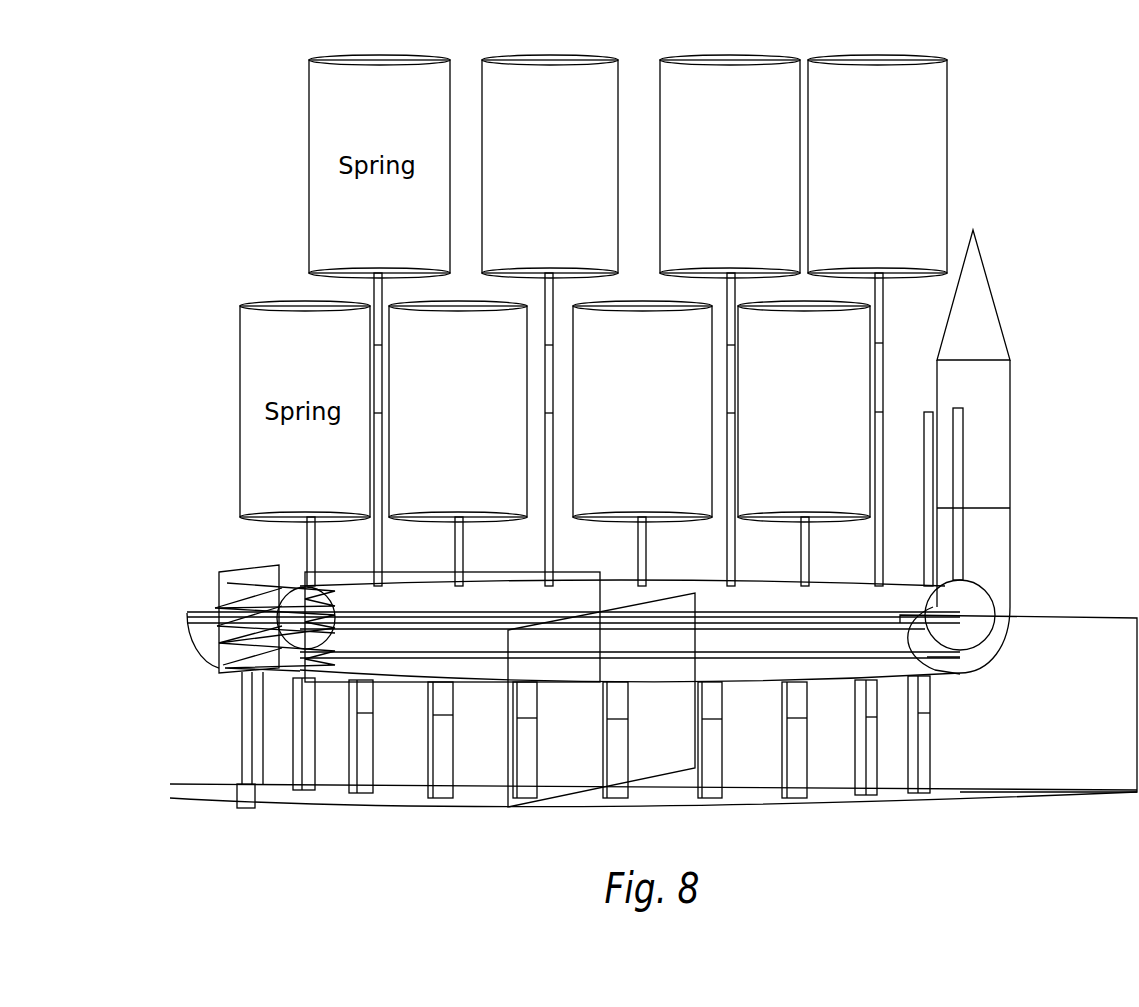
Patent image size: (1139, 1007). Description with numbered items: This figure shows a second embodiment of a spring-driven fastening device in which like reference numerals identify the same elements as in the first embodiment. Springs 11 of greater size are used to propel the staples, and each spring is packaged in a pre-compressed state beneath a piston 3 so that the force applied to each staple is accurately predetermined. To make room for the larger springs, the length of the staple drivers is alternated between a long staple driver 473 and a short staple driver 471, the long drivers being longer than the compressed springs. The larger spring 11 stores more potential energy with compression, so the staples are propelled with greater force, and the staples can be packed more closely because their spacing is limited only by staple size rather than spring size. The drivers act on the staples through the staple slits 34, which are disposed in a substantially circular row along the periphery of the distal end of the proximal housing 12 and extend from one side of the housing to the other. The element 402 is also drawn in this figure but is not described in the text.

The piston 3 is at (867, 174).
The guide body 402 is at (992, 400).
The spring 11 is at (259, 619).
The proximal housing 12 is at (1026, 718).
The short staple driver 471 is at (481, 551).
The long staple driver 473 is at (572, 429).
The staple slit 34 is at (252, 808).